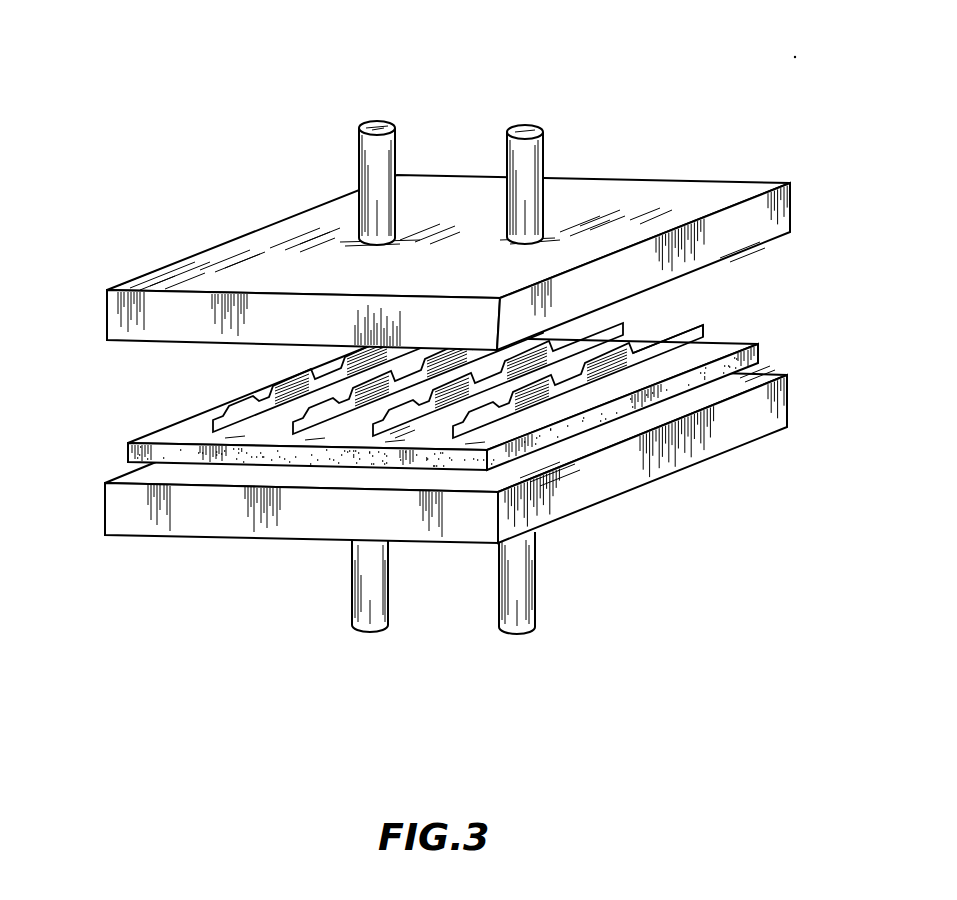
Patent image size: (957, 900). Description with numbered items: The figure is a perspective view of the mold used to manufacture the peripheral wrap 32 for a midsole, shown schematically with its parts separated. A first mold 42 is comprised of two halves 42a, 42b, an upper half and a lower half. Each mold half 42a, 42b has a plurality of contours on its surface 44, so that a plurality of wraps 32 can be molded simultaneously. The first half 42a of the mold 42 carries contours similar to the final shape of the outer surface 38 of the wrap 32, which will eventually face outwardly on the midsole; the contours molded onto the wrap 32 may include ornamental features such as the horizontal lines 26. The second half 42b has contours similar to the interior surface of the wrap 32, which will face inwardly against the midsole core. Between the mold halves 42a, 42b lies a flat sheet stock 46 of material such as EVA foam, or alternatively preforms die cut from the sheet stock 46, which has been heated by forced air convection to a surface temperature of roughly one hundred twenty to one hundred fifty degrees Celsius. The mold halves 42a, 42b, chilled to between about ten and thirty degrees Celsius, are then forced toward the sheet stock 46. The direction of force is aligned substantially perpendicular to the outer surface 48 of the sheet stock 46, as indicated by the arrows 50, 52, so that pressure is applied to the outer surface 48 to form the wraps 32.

The horizontal lines 26 is at (467, 409).
The wrap 32 is at (582, 387).
The outer surface of the wrap 38 is at (660, 352).
The first mold 42 is at (418, 382).
The first half of the mold 42a is at (118, 327).
The second half of the mold 42b is at (122, 507).
The surface of the mold half 44 is at (762, 240).
The flat sheet stock 46 is at (421, 403).
The outer surface of the sheet stock 48 is at (197, 430).
The arrow 50 is at (523, 85).
The arrow 52 is at (514, 664).